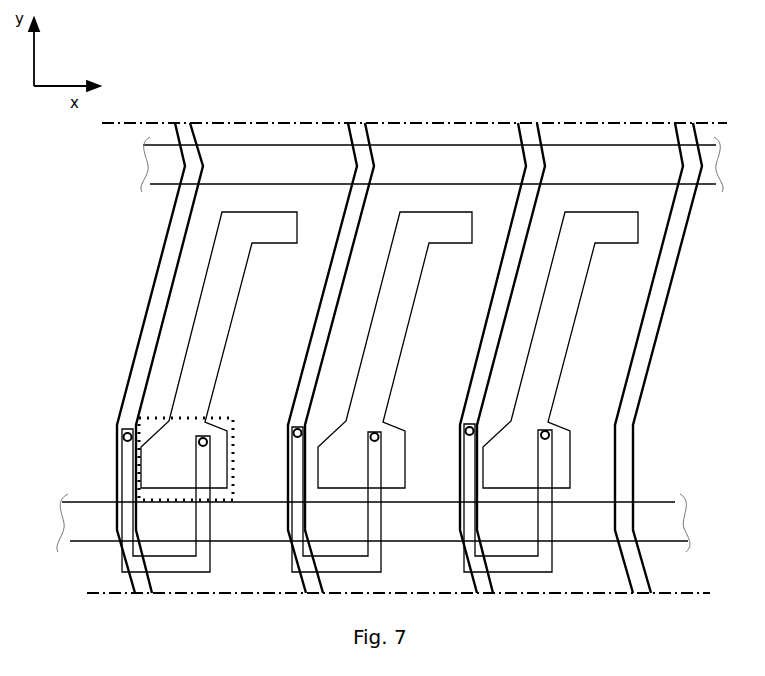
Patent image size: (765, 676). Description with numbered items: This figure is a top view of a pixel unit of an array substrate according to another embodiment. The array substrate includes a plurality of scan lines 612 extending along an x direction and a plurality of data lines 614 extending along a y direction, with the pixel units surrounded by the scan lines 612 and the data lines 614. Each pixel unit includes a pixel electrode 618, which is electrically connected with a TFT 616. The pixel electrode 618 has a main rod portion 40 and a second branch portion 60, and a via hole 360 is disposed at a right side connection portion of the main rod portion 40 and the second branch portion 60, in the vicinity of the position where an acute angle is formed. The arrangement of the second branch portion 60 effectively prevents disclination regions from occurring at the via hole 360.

The main rod portion 40 is at (367, 350).
The second branch portion 60 is at (199, 420).
The via hole 360 is at (203, 457).
The scan line 612 is at (92, 525).
The data line 614 is at (134, 396).
The TFT 616 is at (120, 475).
The pixel electrode 618 is at (200, 343).